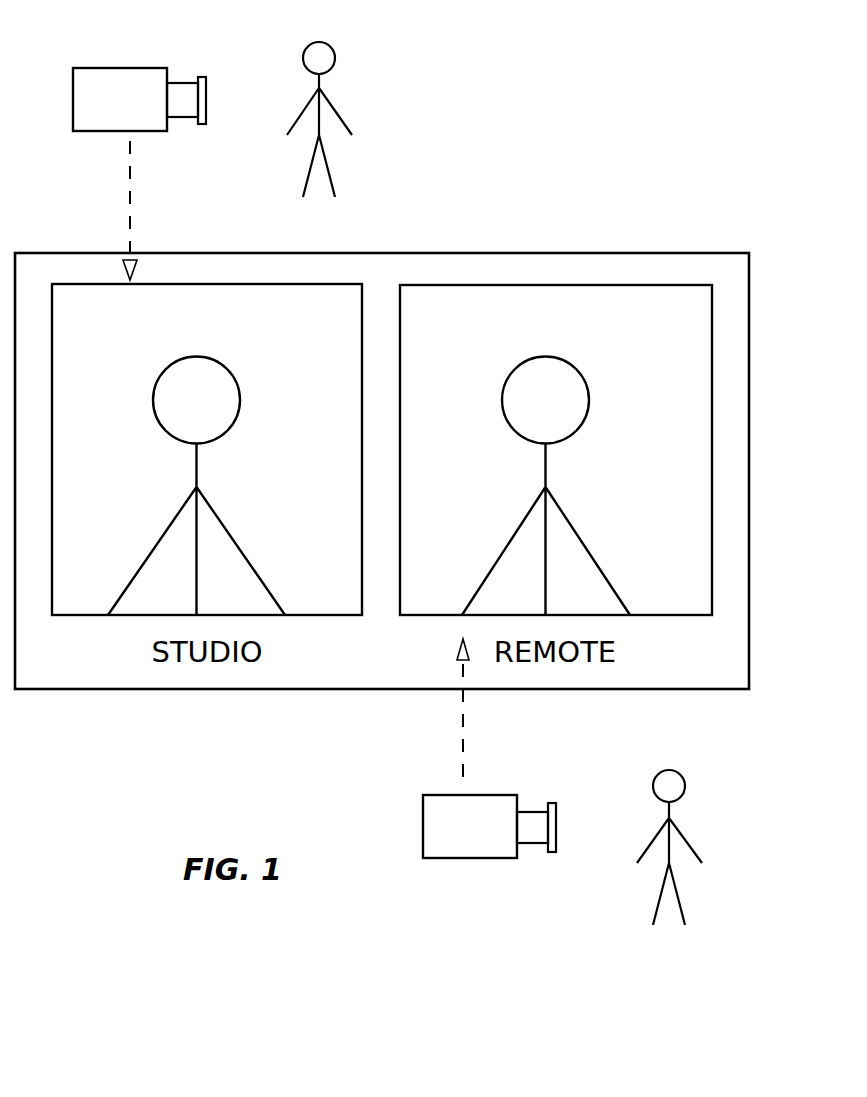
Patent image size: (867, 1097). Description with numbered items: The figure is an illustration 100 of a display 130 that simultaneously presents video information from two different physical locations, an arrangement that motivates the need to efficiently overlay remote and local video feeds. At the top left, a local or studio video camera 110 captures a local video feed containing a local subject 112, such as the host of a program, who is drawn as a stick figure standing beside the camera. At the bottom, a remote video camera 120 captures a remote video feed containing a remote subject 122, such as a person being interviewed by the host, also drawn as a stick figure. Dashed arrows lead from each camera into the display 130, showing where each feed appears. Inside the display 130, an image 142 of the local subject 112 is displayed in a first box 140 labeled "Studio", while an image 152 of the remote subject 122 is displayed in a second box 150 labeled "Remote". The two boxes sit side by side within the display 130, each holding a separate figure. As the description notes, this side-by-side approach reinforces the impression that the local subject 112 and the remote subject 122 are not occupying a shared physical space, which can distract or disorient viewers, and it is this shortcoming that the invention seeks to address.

The illustration 100 is at (181, 33).
The local video camera 110 is at (139, 174).
The local subject 112 is at (330, 42).
The remote video camera 120 is at (489, 748).
The remote subject 122 is at (682, 773).
The display 130 is at (729, 253).
The first box 140 is at (207, 449).
The image of the local subject 142 is at (221, 359).
The second box 150 is at (556, 450).
The image of the remote subject 152 is at (578, 362).